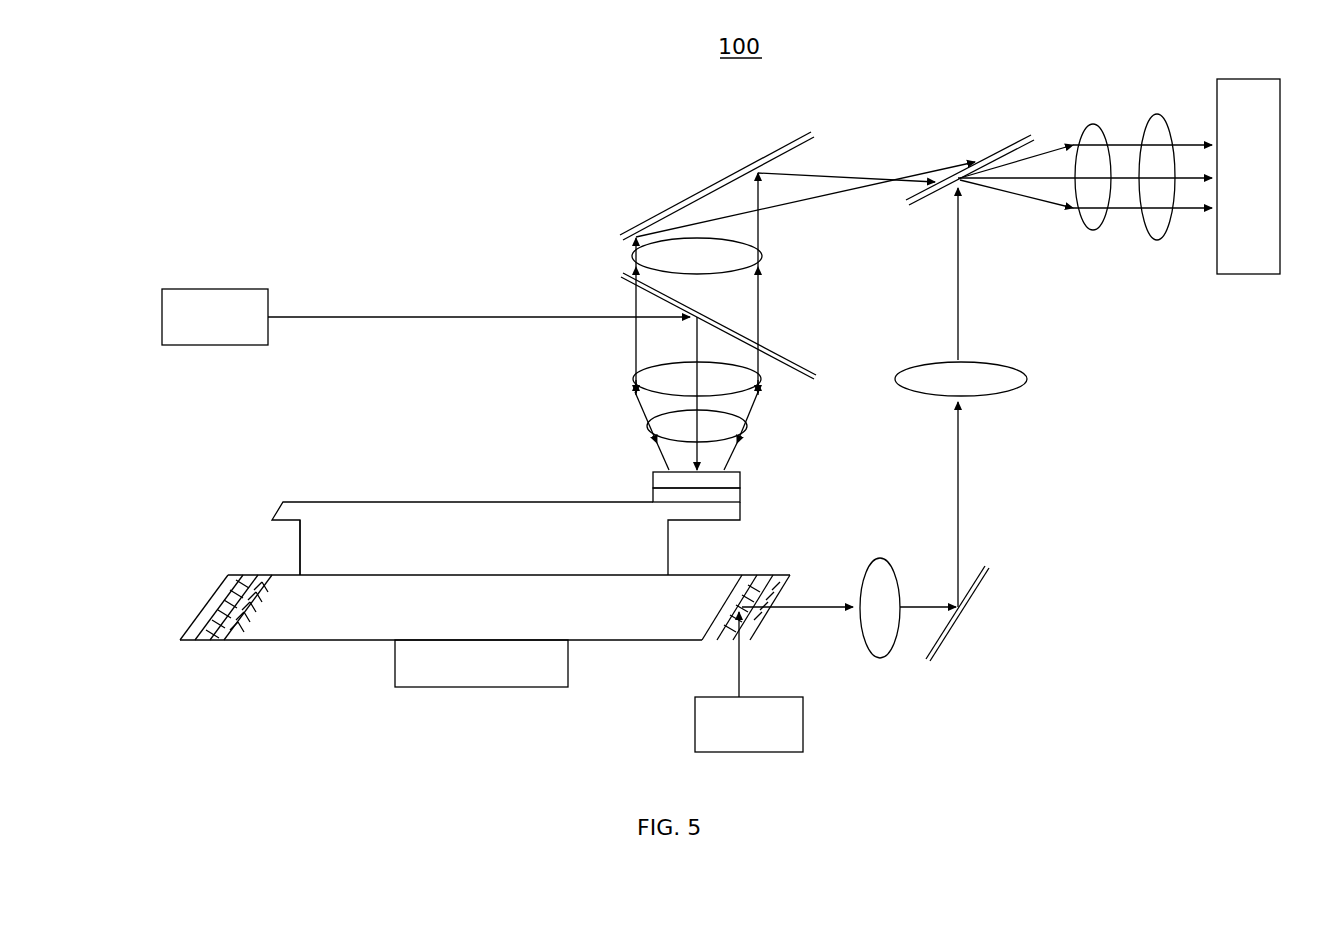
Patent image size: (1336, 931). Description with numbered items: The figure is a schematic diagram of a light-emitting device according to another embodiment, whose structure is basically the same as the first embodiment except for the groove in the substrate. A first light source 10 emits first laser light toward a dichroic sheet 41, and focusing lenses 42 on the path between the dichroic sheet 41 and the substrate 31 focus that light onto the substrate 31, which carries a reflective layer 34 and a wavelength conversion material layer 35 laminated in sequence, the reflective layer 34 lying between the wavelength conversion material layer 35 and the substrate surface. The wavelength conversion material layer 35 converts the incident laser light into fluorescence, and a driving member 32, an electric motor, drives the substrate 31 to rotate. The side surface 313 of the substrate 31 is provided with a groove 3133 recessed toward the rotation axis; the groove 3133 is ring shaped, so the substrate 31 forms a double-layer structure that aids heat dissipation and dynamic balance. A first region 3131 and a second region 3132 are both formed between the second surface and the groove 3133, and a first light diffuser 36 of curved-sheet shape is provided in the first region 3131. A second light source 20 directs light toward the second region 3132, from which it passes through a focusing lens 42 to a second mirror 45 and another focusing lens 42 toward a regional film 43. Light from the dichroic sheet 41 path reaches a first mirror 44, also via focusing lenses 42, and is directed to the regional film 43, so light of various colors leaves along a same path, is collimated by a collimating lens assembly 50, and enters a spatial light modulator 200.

The first light source 10 is at (220, 289).
The second light source 20 is at (800, 720).
The substrate 31 is at (368, 630).
The driving member 32 is at (562, 663).
The side surface 313 is at (277, 503).
The first region 3131 is at (200, 612).
The second region 3132 is at (750, 618).
The groove 3133 is at (300, 540).
The reflective layer 34 is at (733, 495).
The wavelength conversion material layer 35 is at (733, 478).
The first light diffuser 36 is at (238, 590).
The dichroic sheet 41 is at (795, 357).
The focusing lenses 42 is at (752, 248).
The regional film 43 is at (1023, 137).
The first mirror 44 is at (737, 173).
The second mirror 45 is at (980, 585).
The collimating lens assembly 50 is at (1157, 115).
The spatial light modulator 200 is at (1253, 83).